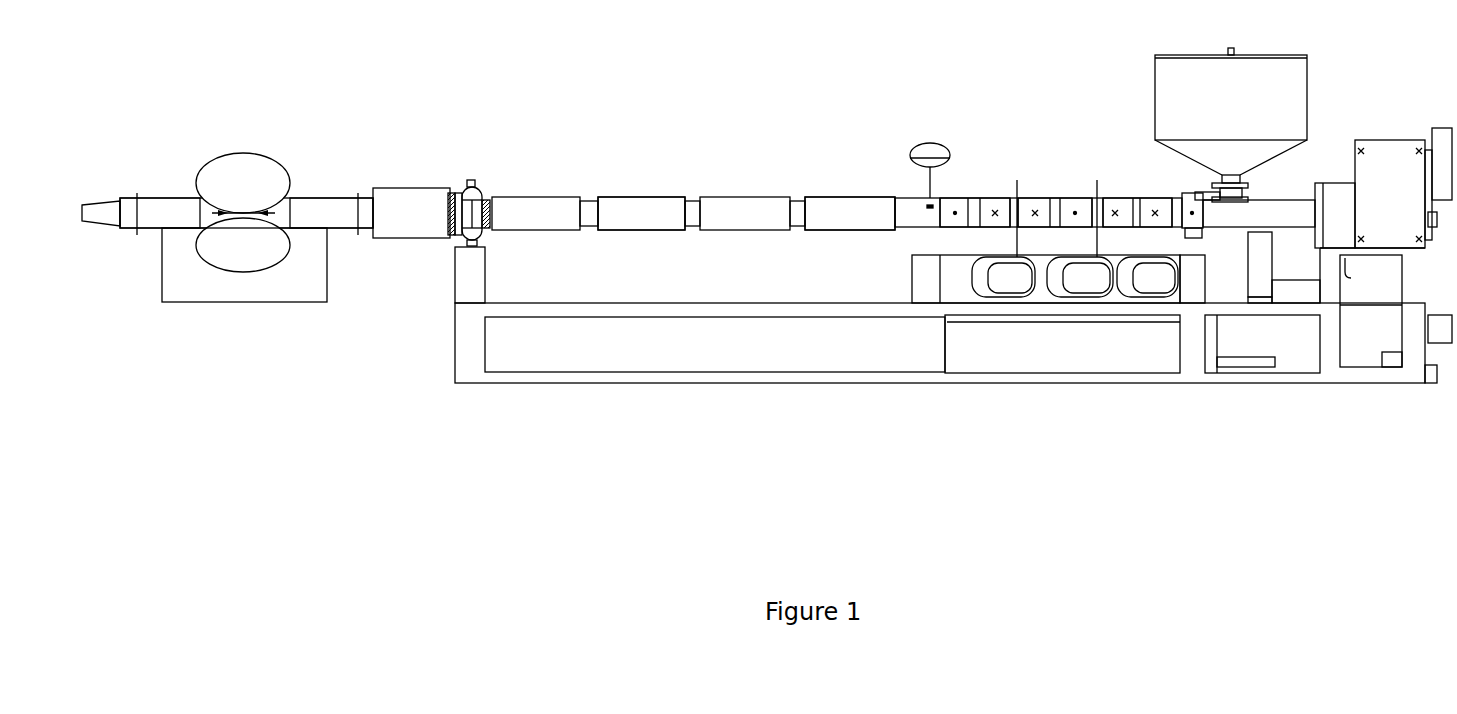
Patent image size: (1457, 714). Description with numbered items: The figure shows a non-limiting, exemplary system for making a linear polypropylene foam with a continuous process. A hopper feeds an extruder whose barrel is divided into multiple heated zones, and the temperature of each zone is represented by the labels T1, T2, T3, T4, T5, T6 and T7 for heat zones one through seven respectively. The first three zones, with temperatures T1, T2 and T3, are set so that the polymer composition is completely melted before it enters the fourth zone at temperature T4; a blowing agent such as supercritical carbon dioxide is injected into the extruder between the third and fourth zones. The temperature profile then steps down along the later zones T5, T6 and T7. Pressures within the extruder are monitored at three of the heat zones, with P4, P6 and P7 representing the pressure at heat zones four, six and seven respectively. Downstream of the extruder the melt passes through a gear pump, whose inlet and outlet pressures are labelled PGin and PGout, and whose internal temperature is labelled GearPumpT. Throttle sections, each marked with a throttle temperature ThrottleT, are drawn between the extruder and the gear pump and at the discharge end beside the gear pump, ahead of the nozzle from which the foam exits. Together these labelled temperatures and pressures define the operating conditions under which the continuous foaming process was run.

The pressure at heat zone 7 P7 is at (485, 200).
The pressure at heat zone 6 P6 is at (640, 213).
The pressure at heat zone 4 P4 is at (850, 213).
The temperature at heat zone 7 T7 is at (535, 213).
The temperature at heat zone 6 T6 is at (640, 213).
The temperature at heat zone 5 T5 is at (745, 213).
The temperature at heat zone 4 T4 is at (850, 213).
The temperature at heat zone 3 T3 is at (975, 200).
The temperature at heat zone 2 T2 is at (1057, 200).
The temperature at heat zone 1 T1 is at (1137, 200).
The gear pump outlet pressure PGout is at (167, 198).
The gear pump inlet pressure PGin is at (320, 198).
The gear pump temperature GearPumpT is at (243, 153).
The throttle temperature ThrottleT is at (243, 302).